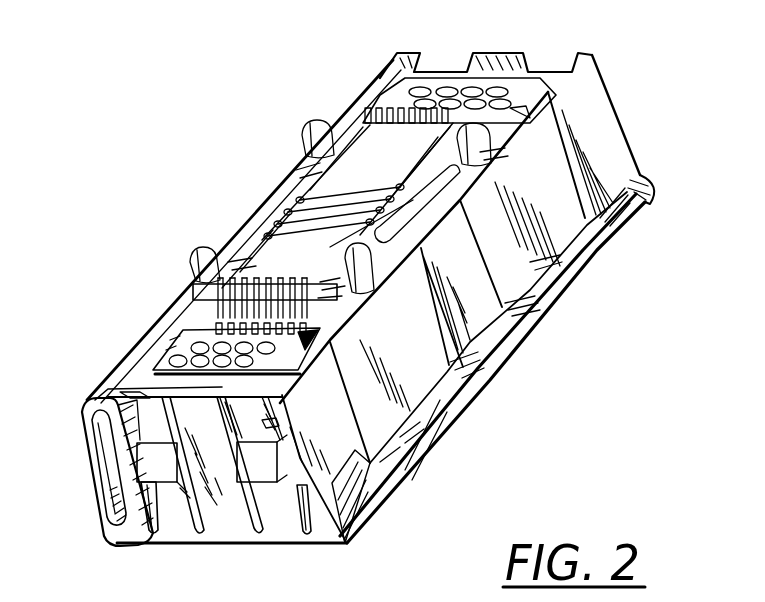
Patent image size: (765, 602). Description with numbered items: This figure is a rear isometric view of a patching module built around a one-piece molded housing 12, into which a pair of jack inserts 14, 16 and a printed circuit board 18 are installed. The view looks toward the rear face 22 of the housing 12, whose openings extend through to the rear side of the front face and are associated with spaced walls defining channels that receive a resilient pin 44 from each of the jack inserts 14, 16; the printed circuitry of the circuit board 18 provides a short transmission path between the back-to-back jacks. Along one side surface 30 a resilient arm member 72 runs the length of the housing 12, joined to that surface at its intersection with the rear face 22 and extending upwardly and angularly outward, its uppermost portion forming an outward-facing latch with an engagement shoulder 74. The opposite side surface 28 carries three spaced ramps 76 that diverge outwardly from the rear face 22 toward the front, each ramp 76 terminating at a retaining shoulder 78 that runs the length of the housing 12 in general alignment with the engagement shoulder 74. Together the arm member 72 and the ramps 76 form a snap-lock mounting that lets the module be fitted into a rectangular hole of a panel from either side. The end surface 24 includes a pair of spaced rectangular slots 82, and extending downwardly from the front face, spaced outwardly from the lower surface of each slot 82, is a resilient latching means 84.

The housing 12 is at (616, 100).
The jack insert 14 is at (180, 333).
The jack insert 16 is at (390, 97).
The printed circuit board 18 is at (247, 247).
The rear face 22 is at (565, 77).
The end surface 24 is at (221, 512).
The side surface 28 is at (388, 413).
The side surface 30 is at (105, 434).
The resilient pin 44 is at (193, 280).
The resilient arm member 72 is at (88, 465).
The engagement shoulder 74 is at (100, 517).
The ramp 76 is at (610, 152).
The retaining shoulder 78 is at (590, 233).
The rectangular slot 82 is at (433, 77).
The resilient latching means 84 is at (165, 513).